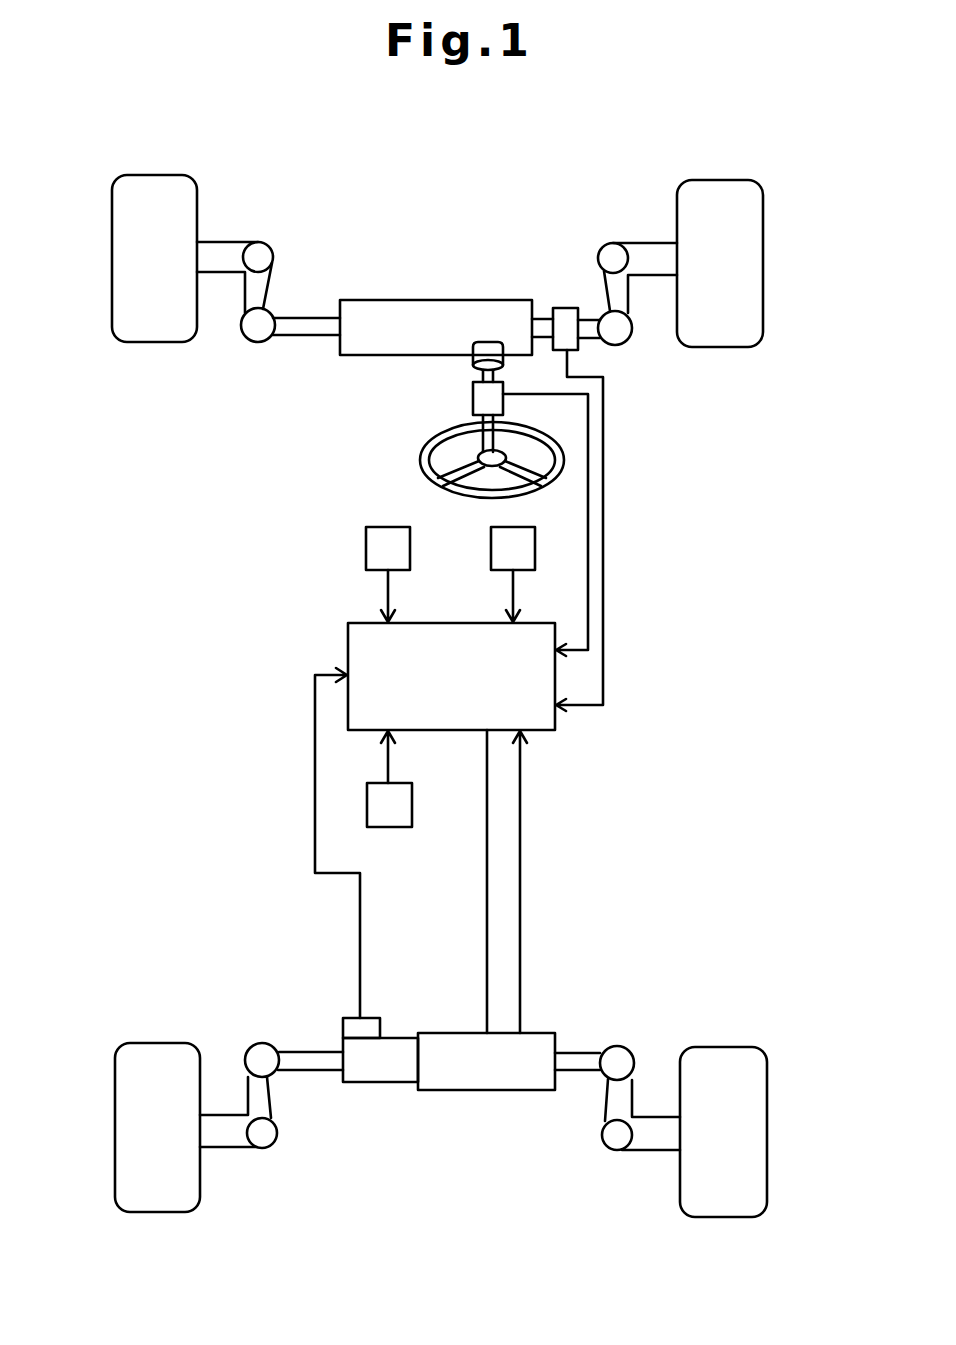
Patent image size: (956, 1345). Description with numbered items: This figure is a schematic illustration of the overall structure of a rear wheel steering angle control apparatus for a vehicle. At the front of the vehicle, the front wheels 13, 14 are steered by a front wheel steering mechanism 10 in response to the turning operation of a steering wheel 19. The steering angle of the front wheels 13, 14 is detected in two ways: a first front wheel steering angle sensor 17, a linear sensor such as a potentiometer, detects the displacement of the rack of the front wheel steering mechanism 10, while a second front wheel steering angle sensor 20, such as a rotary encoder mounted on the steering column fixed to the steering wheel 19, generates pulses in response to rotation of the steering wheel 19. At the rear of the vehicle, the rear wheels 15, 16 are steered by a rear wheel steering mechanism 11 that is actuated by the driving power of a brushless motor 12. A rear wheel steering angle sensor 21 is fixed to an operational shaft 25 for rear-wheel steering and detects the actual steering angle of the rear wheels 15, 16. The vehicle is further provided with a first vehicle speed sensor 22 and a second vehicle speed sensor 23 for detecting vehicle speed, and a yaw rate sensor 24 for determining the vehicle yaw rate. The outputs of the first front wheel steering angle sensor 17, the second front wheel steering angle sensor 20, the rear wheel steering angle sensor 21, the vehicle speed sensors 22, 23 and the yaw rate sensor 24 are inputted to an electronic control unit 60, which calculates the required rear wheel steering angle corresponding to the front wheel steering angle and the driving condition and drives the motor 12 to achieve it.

The front wheel steering mechanism 10 is at (372, 300).
The rear wheel steering mechanism 11 is at (449, 1090).
The motor 12 is at (453, 1033).
The front wheel 13 is at (150, 343).
The front wheel 14 is at (718, 348).
The rear wheel 15 is at (163, 1042).
The rear wheel 16 is at (722, 1046).
The first front wheel steering angle sensor 17 is at (565, 308).
The steering wheel 19 is at (420, 456).
The second front wheel steering angle sensor 20 is at (473, 394).
The rear wheel steering angle sensor 21 is at (350, 1018).
The first vehicle speed sensor 22 is at (366, 548).
The second vehicle speed sensor 23 is at (491, 548).
The yaw rate sensor 24 is at (392, 828).
The operational shaft 25 is at (577, 1072).
The electronic control unit 60 is at (348, 636).